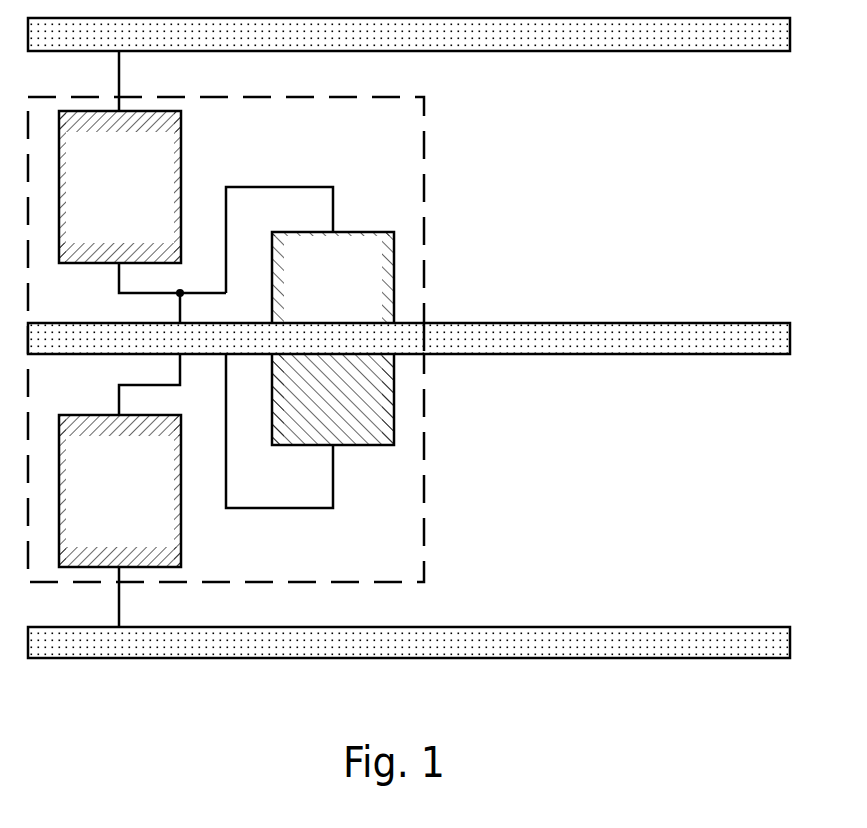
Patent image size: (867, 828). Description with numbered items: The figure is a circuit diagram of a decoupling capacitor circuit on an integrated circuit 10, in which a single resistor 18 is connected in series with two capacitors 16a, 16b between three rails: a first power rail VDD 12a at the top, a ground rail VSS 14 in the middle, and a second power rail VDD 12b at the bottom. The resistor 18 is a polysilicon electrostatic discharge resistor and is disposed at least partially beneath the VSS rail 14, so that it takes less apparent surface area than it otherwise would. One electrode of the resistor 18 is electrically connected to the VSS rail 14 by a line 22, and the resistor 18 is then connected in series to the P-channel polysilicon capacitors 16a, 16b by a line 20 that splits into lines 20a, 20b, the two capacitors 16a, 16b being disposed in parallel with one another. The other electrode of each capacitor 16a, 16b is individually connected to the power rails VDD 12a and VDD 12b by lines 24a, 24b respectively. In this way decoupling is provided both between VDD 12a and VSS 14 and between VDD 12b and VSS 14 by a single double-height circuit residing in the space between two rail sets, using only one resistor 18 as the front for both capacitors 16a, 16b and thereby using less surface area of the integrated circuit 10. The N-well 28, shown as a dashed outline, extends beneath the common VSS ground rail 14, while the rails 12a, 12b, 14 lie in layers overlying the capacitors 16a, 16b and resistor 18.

The integrated circuit 10 is at (788, 698).
The first power rail VDD 12a is at (409, 34).
The second power rail VDD 12b is at (409, 642).
The ground rail VSS 14 is at (409, 338).
The P-channel polysilicon capacitor 16a is at (120, 187).
The P-channel polysilicon capacitor 16b is at (120, 491).
The resistor 18 is at (333, 338).
The line 20 is at (279, 225).
The line 20a is at (148, 293).
The line 20b is at (125, 385).
The line 22 is at (279, 448).
The line 24a is at (144, 81).
The line 24b is at (144, 597).
The N-well 28 is at (226, 339).